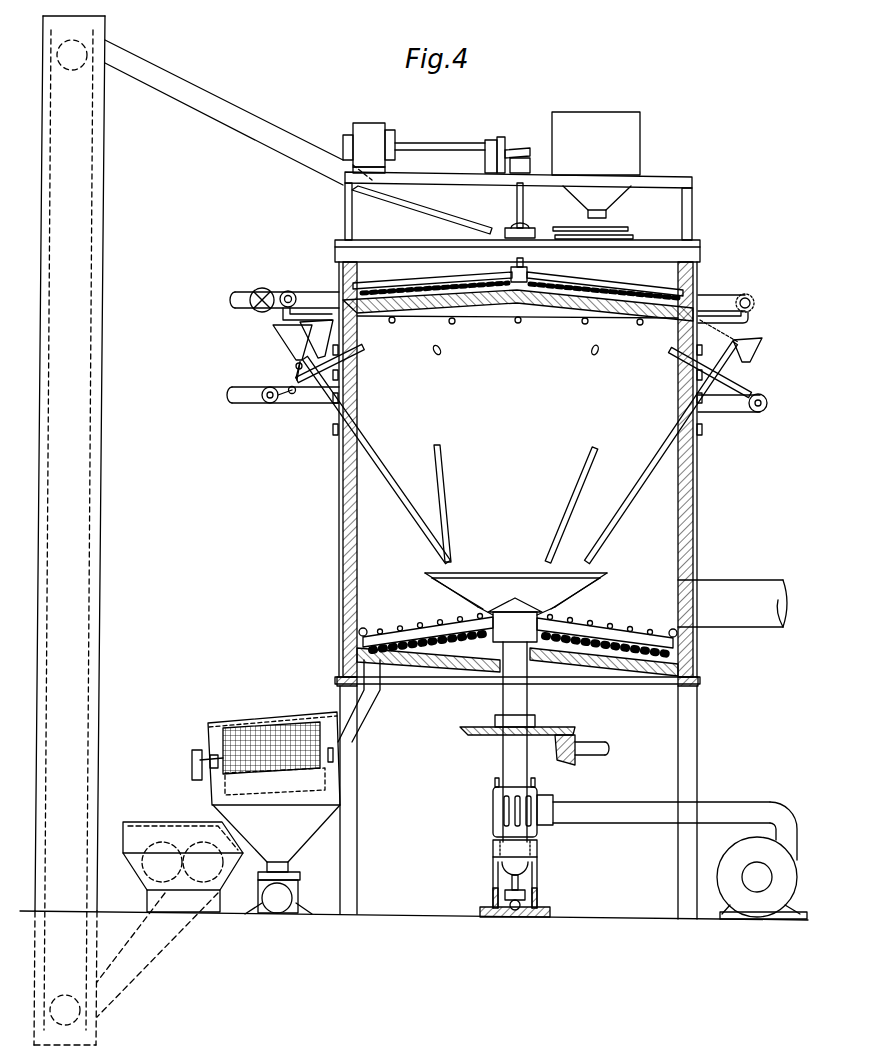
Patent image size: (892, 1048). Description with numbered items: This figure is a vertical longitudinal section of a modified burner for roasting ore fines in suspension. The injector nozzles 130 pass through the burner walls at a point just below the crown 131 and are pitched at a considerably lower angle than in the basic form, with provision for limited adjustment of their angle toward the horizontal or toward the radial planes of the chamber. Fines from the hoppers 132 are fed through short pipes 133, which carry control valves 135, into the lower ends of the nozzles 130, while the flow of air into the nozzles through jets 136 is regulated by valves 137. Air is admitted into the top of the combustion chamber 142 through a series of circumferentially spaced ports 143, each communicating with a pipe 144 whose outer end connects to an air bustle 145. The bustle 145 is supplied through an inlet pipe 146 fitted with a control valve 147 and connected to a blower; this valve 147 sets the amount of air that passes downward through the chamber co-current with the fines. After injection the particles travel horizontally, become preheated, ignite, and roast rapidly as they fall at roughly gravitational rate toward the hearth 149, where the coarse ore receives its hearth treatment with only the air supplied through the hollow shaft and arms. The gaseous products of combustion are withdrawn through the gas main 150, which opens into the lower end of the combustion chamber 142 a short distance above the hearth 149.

The injector nozzles 130 is at (363, 350).
The crown 131 is at (552, 312).
The hoppers 132 is at (325, 323).
The short pipes 133 is at (300, 362).
The control valves 135 is at (296, 367).
The jets 136 is at (294, 394).
The valves 137 is at (284, 401).
The combustion chamber 142 is at (674, 493).
The ports 143 is at (518, 324).
The pipe 144 is at (750, 322).
The air bustle 145 is at (746, 296).
The inlet pipe 146 is at (243, 290).
The control valve 147 is at (270, 290).
The hearth 149 is at (432, 656).
The gas main 150 is at (730, 585).